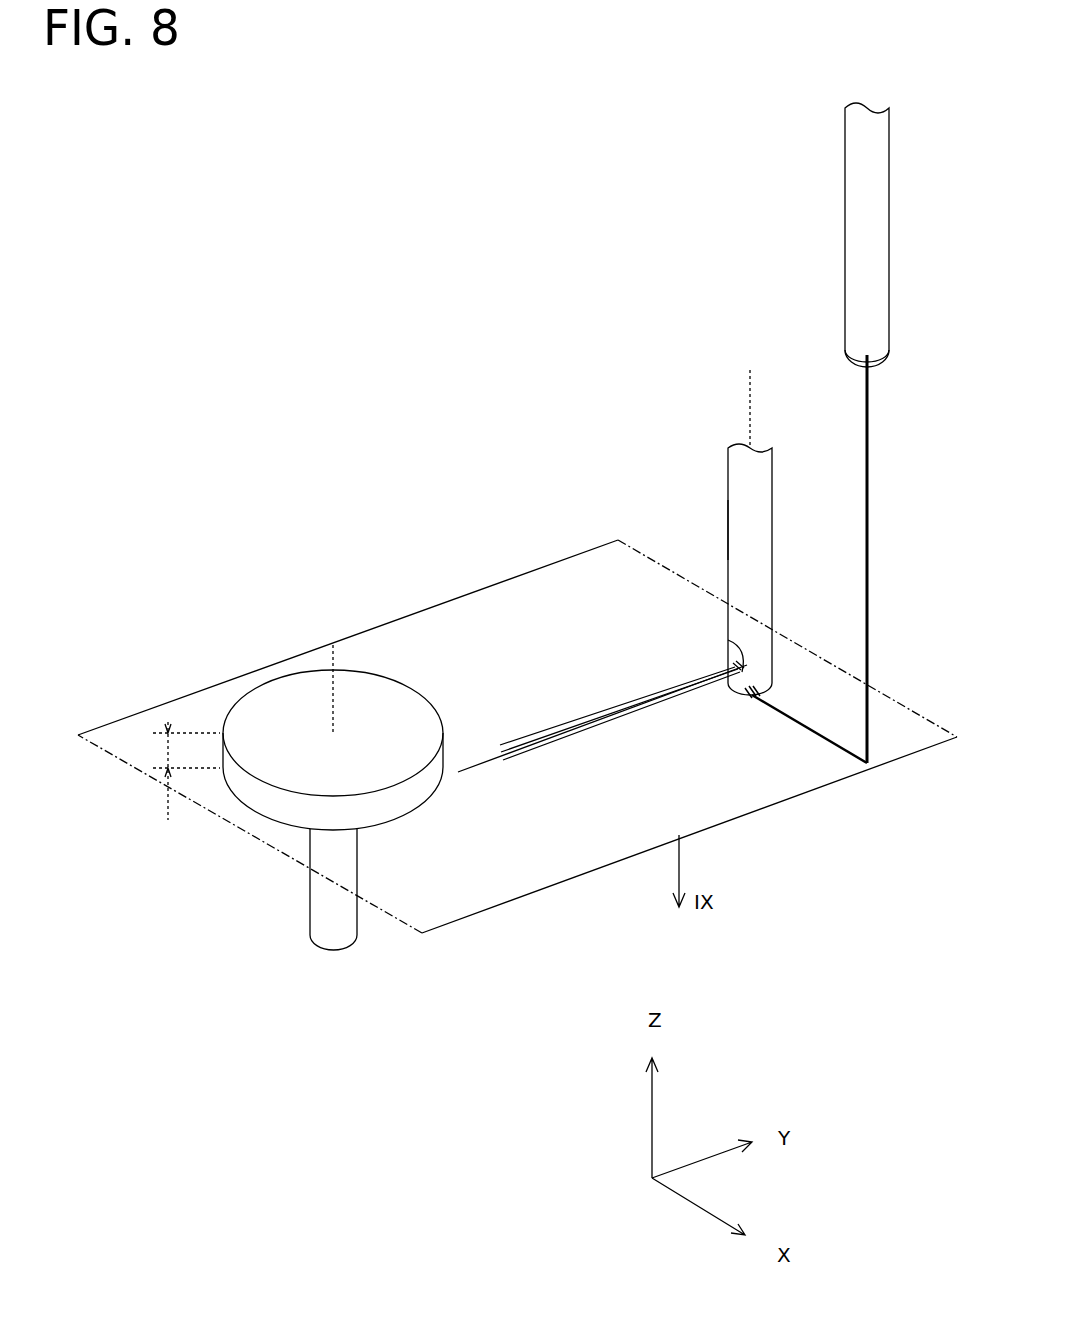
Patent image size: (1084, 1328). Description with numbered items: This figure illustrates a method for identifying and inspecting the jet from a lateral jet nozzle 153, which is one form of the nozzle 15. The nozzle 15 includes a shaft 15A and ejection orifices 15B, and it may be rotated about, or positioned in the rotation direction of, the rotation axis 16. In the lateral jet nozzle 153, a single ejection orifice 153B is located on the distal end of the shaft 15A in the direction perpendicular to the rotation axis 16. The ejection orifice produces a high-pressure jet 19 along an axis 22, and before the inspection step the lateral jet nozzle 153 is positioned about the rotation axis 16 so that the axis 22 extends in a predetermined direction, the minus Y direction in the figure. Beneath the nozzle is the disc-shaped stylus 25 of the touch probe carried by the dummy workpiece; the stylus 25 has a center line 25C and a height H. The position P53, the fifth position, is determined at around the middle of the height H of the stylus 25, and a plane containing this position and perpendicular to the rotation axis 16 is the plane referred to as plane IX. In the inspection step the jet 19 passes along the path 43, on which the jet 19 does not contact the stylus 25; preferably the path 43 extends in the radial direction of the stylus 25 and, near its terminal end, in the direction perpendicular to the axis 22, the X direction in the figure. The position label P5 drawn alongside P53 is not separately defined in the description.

The rotation axis 16 is at (750, 393).
The path 43 is at (867, 423).
The lateral jet nozzle 153 is at (728, 478).
The nozzle 15 is at (686, 569).
The shaft 15A is at (728, 531).
The ejection orifice 153B is at (729, 636).
The ejection orifice 15B is at (672, 637).
The jet 19 is at (592, 708).
The axis 22 is at (473, 765).
The stylus 25 is at (385, 677).
The center line 25C is at (333, 670).
The position P53 is at (745, 699).
The contact point P5 is at (684, 720).
The height H is at (179, 771).